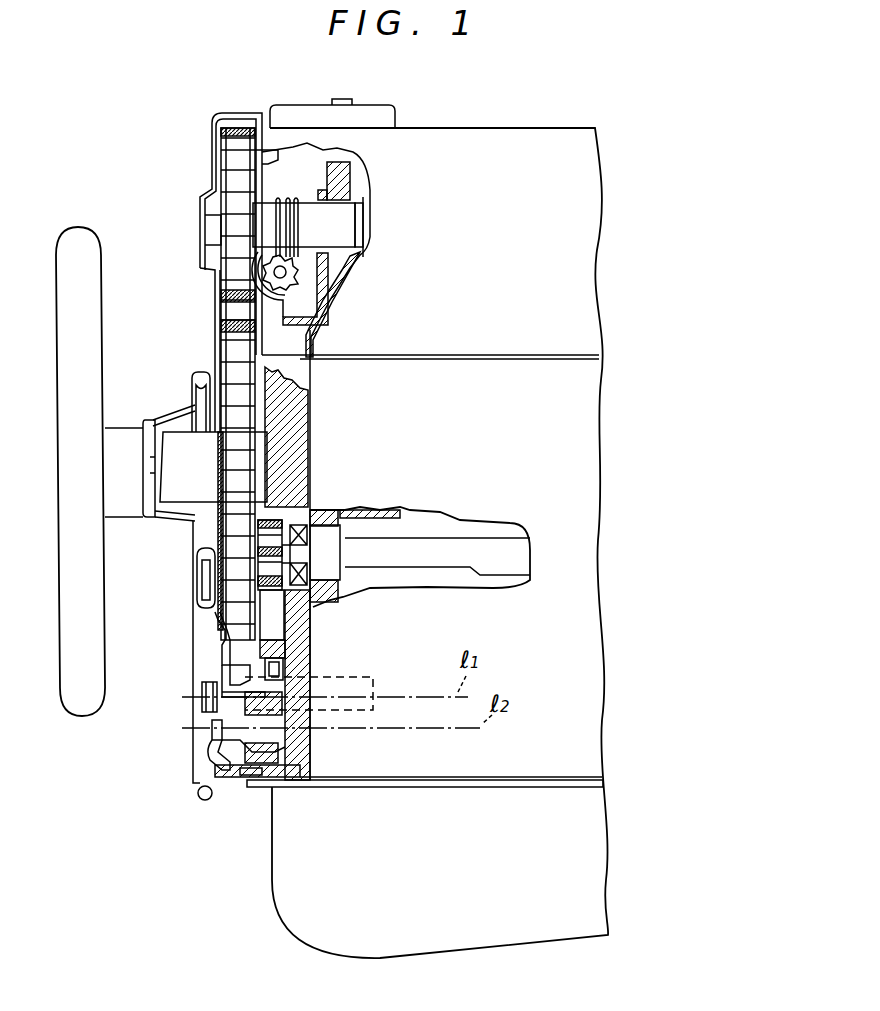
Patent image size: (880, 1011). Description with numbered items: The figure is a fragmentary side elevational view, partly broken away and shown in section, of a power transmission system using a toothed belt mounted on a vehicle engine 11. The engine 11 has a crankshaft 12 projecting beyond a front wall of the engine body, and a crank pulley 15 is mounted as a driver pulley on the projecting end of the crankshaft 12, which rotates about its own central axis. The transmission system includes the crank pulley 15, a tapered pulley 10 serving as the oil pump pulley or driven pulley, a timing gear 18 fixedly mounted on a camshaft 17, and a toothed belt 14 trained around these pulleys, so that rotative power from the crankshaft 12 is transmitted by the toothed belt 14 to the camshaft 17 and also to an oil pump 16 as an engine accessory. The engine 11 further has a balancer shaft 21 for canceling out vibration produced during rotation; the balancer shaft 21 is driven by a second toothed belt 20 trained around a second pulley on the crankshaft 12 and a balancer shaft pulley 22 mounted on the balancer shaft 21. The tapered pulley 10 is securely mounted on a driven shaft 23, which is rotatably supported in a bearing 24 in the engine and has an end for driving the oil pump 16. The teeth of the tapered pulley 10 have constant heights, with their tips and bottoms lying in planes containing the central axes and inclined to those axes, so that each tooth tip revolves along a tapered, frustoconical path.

The tapered pulley 10 is at (228, 760).
The vehicle engine 11 is at (506, 117).
The crankshaft 12 is at (362, 677).
The toothed belt 14 is at (235, 365).
The crank pulley 15 is at (223, 673).
The oil pump 16 is at (311, 742).
The camshaft 17 is at (345, 215).
The timing gear 18 is at (228, 181).
The second toothed belt 20 is at (275, 603).
The balancer shaft 21 is at (470, 545).
The balancer shaft pulley 22 is at (268, 558).
The driven shaft 23 is at (295, 698).
The bearing 24 is at (275, 765).